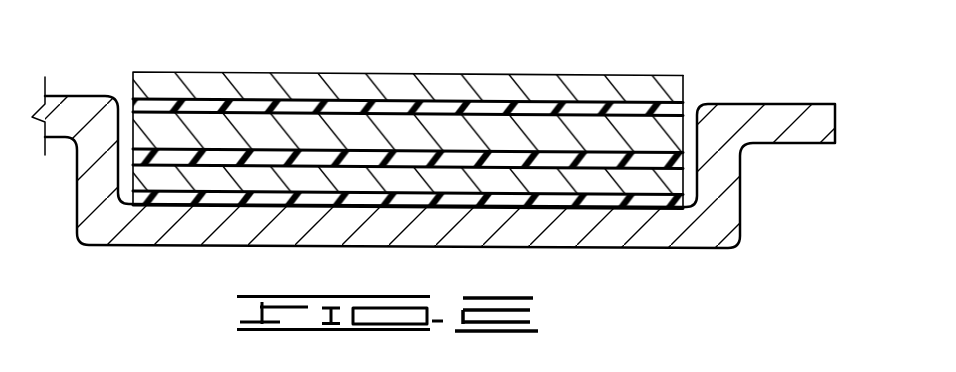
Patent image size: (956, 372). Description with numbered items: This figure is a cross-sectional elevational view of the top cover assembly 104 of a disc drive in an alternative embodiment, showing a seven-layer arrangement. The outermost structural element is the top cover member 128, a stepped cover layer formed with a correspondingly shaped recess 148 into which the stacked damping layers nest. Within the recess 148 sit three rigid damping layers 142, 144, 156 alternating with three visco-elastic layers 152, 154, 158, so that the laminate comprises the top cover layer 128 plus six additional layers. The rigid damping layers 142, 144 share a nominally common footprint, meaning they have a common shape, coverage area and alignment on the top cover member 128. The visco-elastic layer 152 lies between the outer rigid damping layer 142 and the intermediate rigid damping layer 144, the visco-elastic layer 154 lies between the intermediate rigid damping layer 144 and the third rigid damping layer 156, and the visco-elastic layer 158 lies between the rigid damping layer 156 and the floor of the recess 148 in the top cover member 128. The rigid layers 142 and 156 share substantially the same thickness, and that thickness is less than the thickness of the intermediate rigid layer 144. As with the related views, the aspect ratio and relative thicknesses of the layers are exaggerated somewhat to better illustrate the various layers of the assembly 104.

The top cover assembly 104 is at (407, 150).
The top cover member 128 is at (728, 218).
The rigid damping layer 142 is at (262, 78).
The visco-elastic layer 152 is at (410, 107).
The rigid damping layer 144 is at (258, 132).
The visco-elastic layer 154 is at (307, 158).
The rigid damping layer 156 is at (536, 168).
The visco-elastic layer 158 is at (607, 197).
The recess 148 is at (693, 94).